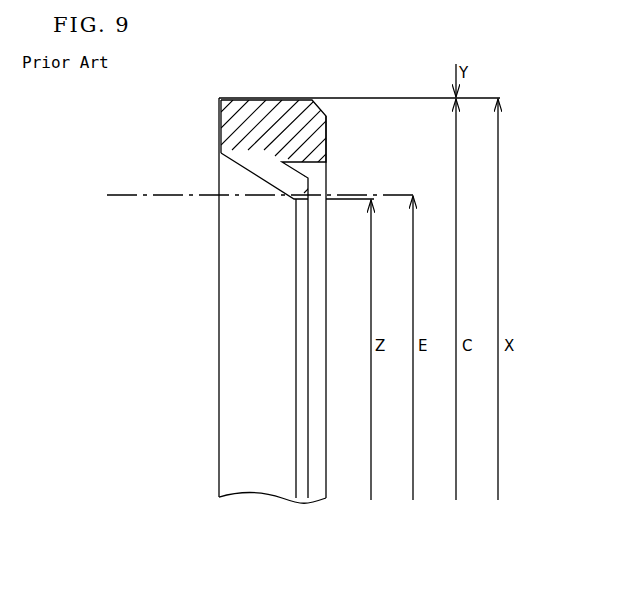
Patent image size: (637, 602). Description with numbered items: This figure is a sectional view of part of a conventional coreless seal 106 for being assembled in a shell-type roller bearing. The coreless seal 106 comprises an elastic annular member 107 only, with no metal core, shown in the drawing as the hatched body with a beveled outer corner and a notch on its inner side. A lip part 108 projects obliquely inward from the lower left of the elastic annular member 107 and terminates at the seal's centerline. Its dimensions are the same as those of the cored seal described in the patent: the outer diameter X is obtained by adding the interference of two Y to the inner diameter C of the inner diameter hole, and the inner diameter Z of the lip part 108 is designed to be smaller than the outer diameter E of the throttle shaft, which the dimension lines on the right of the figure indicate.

The coreless seal 106 is at (341, 80).
The elastic annular member 107 is at (283, 299).
The lip part 108 is at (236, 325).